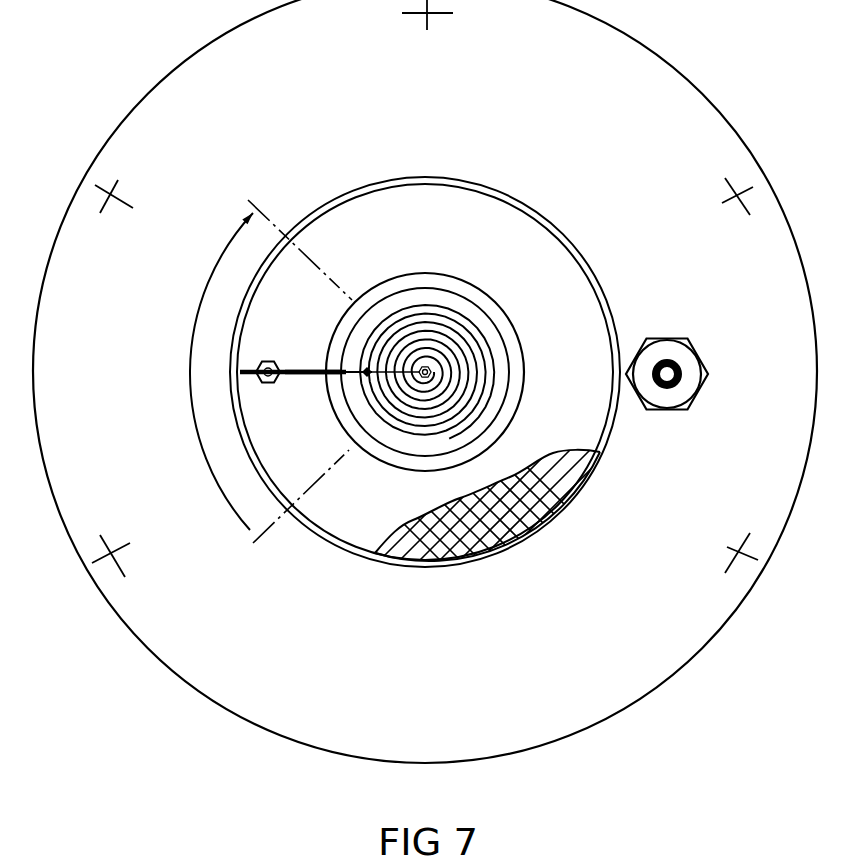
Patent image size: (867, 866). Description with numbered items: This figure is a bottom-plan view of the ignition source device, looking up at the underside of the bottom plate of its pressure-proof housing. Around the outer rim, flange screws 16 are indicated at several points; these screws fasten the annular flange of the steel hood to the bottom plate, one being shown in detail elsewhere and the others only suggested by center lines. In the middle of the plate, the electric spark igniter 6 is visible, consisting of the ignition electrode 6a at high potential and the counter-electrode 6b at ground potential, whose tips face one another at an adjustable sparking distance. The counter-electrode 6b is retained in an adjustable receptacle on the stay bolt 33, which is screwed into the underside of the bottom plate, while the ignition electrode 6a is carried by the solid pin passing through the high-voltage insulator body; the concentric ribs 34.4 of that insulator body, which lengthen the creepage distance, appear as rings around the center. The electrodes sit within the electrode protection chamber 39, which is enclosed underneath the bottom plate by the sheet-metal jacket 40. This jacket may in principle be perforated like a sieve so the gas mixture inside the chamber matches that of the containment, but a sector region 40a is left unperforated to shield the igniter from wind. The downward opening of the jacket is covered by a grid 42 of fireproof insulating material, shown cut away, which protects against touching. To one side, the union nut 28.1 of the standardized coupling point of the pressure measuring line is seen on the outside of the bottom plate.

The flange screw 16 is at (427, 18).
The electrode protection chamber 39 is at (424, 258).
The ribs 34.4 is at (477, 340).
The electric spark igniter 6 is at (340, 361).
The ignition electrode 6a is at (364, 365).
The counter-electrode 6b is at (300, 380).
The stay bolt 33 is at (277, 382).
The union nut 28.1 is at (682, 357).
The sheet-metal jacket 40 is at (527, 537).
The sector region 40a is at (193, 333).
The grid 42 is at (450, 563).